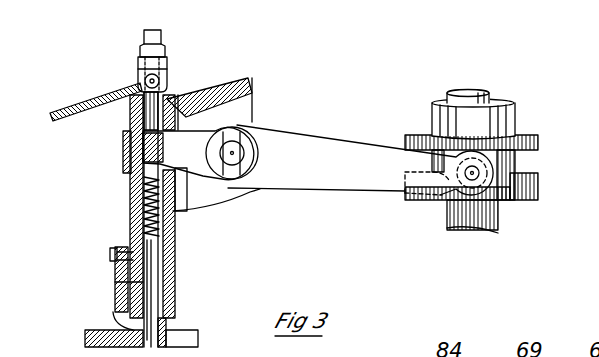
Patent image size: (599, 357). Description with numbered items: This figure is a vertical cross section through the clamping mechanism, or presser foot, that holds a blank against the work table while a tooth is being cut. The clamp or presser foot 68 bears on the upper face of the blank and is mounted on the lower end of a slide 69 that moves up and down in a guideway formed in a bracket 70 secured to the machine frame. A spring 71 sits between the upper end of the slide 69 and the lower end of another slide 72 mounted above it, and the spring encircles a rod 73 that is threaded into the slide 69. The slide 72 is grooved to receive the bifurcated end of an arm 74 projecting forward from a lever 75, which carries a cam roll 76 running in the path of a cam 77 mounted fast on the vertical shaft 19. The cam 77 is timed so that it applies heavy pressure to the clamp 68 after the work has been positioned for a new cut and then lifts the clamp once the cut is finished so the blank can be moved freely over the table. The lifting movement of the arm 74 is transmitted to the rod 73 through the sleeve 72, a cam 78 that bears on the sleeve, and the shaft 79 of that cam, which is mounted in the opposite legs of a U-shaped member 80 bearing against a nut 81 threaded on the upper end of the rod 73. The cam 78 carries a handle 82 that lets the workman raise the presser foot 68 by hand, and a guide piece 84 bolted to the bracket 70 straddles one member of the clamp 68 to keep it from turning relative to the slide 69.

The vertical shaft 19 is at (489, 101).
The clamp or presser foot 68 is at (186, 337).
The slide 69 is at (165, 273).
The bracket 70 is at (129, 227).
The spring 71 is at (174, 229).
The slide 72 is at (190, 104).
The rod 73 is at (123, 131).
The arm 74 is at (187, 143).
The lever 75 is at (339, 130).
The cam roll 76 is at (513, 201).
The cam 77 is at (537, 140).
The cam 78 is at (166, 88).
The shaft 79 is at (137, 78).
The U-shaped member 80 is at (138, 60).
The nut 81 is at (165, 50).
The handle 82 is at (90, 98).
The guide piece 84 is at (114, 302).